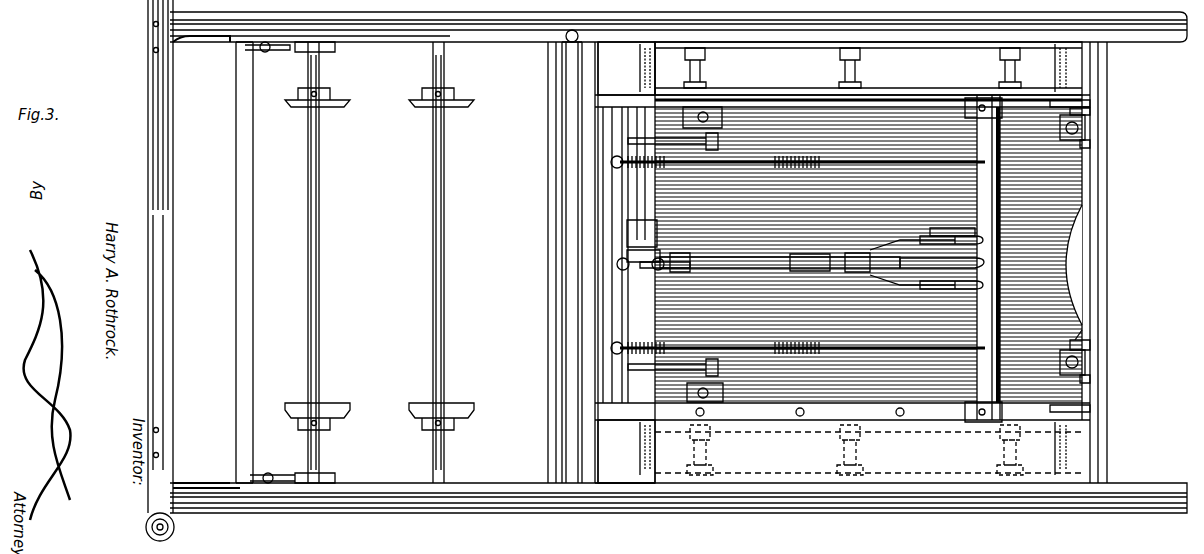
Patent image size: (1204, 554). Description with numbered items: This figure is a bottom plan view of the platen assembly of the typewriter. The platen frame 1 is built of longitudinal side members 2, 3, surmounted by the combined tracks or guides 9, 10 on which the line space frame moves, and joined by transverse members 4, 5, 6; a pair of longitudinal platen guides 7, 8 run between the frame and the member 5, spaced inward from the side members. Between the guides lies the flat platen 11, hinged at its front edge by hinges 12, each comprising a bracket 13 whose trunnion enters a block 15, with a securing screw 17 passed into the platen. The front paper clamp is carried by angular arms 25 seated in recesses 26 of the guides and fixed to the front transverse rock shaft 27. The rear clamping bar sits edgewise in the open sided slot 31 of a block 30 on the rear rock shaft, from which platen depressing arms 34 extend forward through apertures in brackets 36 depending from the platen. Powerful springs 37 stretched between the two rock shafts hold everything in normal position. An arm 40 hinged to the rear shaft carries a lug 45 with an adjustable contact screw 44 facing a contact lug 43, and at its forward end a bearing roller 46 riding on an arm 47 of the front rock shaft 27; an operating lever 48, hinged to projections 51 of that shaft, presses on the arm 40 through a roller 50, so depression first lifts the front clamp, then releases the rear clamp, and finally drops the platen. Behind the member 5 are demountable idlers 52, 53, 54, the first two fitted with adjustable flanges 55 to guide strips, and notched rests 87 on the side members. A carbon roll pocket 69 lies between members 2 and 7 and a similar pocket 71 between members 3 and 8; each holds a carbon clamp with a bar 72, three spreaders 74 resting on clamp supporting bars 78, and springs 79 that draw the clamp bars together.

The platen frame 1 is at (1108, 80).
The longitudinal side member 2 is at (1175, 43).
The longitudinal side member 3 is at (1160, 482).
The transverse member 4 is at (250, 255).
The transverse member 5 is at (588, 232).
The transverse member 6 is at (1108, 282).
The longitudinal platen guide 7 is at (790, 82).
The longitudinal platen guide 8 is at (618, 440).
The combined track or guide 9 is at (198, 482).
The combined track or guide 10 is at (215, 44).
The platen 11 is at (1075, 335).
The hinge 12 is at (1086, 130).
The bracket 13 is at (1090, 103).
The block 15 is at (1090, 112).
The securing screw 17 is at (1090, 145).
The angular arm 25 is at (1042, 110).
The recess 26 is at (980, 100).
The transverse rock shaft 27 is at (1022, 188).
The block 30 is at (655, 228).
The open sided slot or seat 31 is at (948, 226).
The platen depressing arm 34 is at (695, 152).
The bracket 36 is at (723, 122).
The spring 37 is at (785, 170).
The arm 40 is at (760, 255).
The contact lug 43 is at (618, 268).
The adjustable contact screw 44 is at (660, 270).
The lug or projection 45 is at (650, 250).
The bearing roller 46 is at (930, 236).
The arm 47 is at (920, 288).
The operating lever 48 is at (805, 253).
The roller 50 is at (845, 270).
The projection 51 is at (950, 288).
The idler 52 is at (320, 170).
The idler 53 is at (445, 190).
The idler 54 is at (547, 195).
The adjustable flange 55 is at (351, 102).
The carbon roll pocket 69 is at (608, 485).
The pocket 71 is at (626, 68).
The bar 72 is at (762, 84).
The spreader 74 is at (706, 73).
The clamp supporting bar 78 is at (644, 73).
The spring 79 is at (640, 82).
The notched rest 87 is at (290, 50).